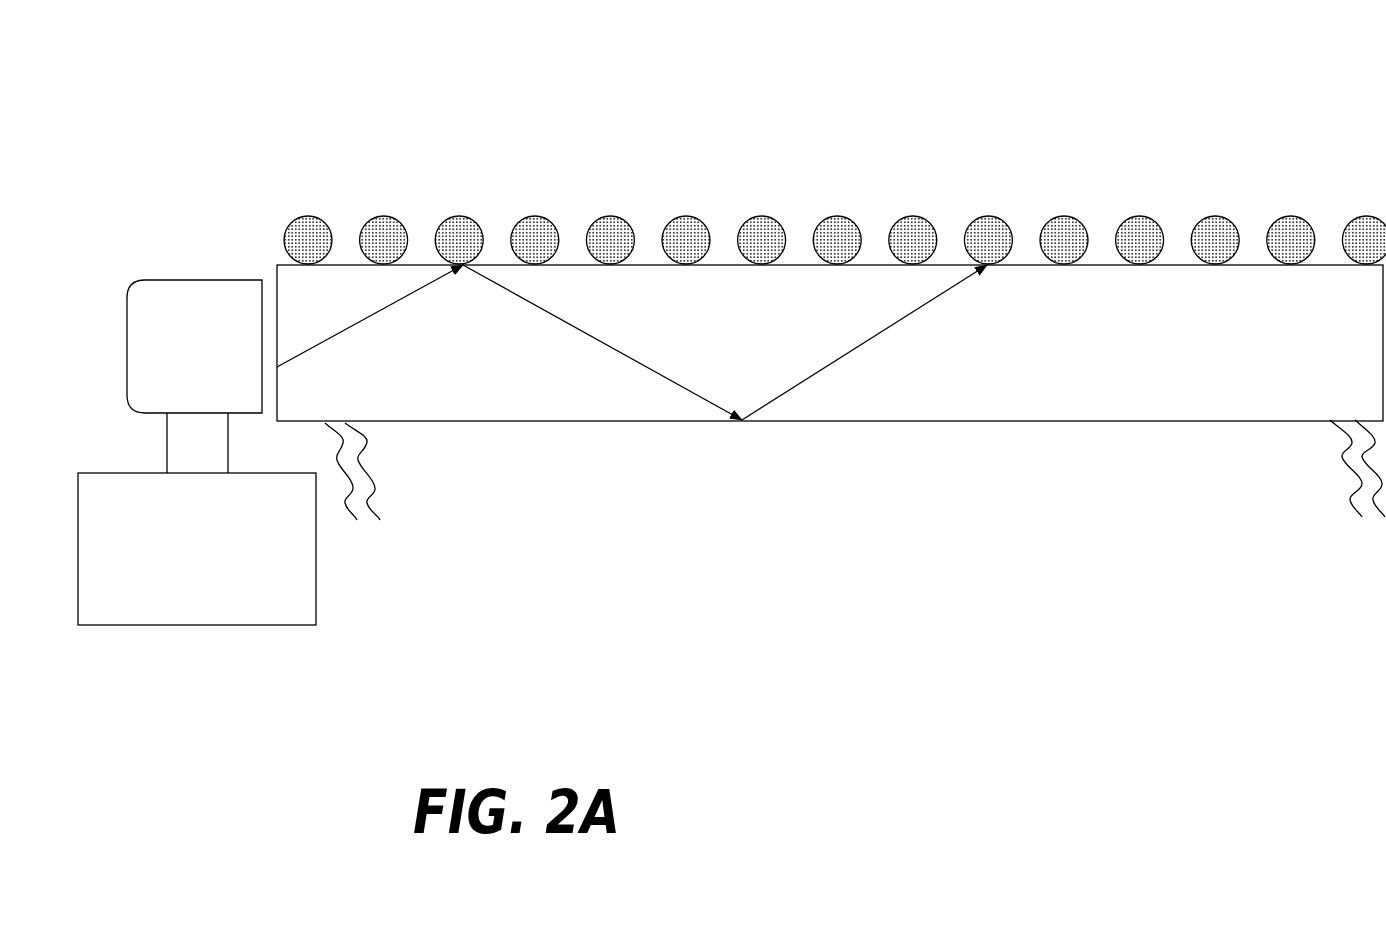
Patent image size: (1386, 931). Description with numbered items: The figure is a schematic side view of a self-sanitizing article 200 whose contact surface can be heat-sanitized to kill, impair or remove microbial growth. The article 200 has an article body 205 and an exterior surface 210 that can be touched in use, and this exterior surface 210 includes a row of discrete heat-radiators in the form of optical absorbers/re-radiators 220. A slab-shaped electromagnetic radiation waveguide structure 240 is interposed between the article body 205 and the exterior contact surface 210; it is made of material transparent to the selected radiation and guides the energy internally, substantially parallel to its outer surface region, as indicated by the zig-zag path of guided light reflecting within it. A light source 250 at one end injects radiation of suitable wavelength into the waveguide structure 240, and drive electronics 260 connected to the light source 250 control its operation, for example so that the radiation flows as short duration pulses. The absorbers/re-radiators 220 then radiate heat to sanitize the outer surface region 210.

The self-sanitizing article 200 is at (362, 68).
The article body 205 is at (855, 470).
The exterior surface 210 is at (658, 196).
The optical absorbers/re-radiators 220 is at (772, 212).
The electromagnetic radiation waveguide structure 240 is at (1255, 362).
The light source 250 is at (215, 361).
The drive electronics 260 is at (215, 561).